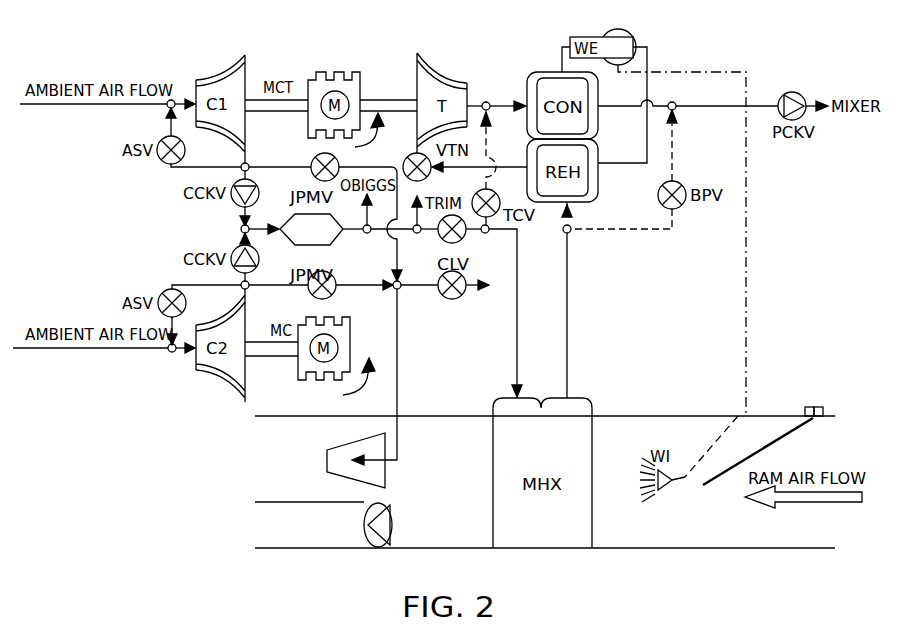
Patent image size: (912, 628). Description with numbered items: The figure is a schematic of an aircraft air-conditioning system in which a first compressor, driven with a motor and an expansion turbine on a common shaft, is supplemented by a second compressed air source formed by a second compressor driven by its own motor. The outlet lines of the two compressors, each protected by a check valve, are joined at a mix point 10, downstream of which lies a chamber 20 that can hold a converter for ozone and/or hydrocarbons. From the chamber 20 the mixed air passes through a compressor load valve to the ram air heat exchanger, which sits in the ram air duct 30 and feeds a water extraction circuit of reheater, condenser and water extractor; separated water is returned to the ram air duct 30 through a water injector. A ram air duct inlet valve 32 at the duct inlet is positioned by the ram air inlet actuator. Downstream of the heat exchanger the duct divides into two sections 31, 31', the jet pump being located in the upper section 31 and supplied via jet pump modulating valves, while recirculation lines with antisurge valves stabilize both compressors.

The mix point 10 is at (240, 232).
The chamber 20 is at (345, 240).
The ram air duct 30 is at (700, 540).
The section of the ram air duct 31 is at (334, 388).
The section of the ram air duct 31' is at (294, 524).
The ram air duct inlet valve 32 is at (788, 440).